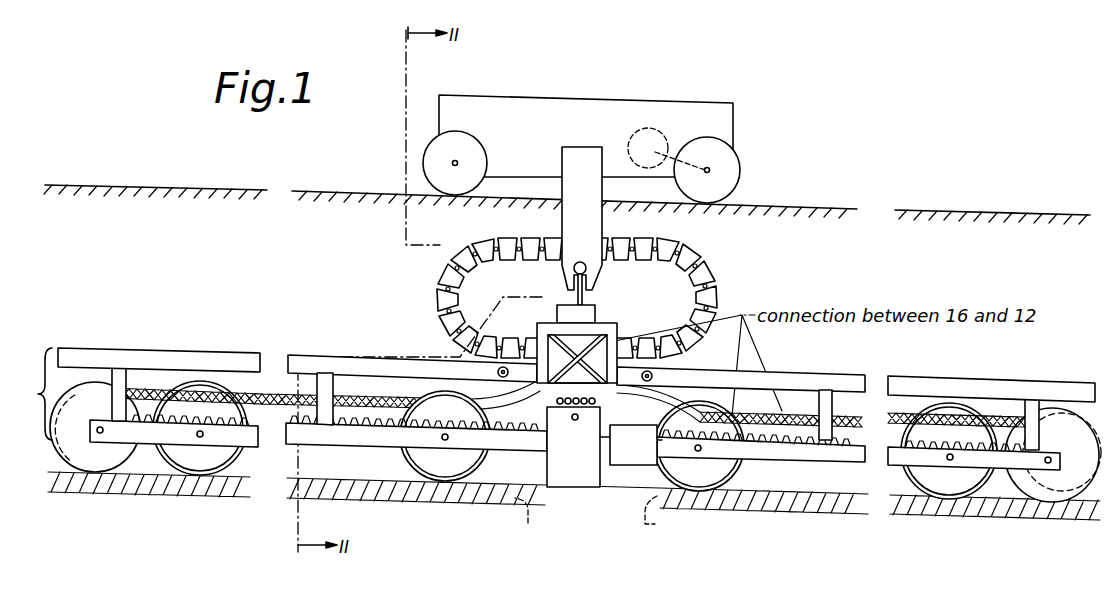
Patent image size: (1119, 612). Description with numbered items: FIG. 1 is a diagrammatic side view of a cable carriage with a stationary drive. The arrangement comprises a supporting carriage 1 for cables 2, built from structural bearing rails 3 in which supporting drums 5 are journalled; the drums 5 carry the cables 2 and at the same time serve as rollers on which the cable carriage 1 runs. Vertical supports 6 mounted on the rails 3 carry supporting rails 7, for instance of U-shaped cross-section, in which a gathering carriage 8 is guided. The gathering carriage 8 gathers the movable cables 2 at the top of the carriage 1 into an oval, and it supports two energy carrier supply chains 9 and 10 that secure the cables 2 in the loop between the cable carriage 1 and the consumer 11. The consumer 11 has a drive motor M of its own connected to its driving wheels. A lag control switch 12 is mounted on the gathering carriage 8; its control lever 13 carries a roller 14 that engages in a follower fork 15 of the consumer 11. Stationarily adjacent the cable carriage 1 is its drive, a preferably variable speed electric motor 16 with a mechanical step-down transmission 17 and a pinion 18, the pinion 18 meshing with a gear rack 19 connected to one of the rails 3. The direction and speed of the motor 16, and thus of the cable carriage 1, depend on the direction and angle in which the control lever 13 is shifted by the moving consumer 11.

The supporting carriage 1 is at (280, 396).
The cables 2 is at (287, 397).
The bearing rails 3 is at (790, 453).
The supporting drums 5 is at (208, 398).
The vertical supports 6 is at (307, 355).
The supporting rails 7 is at (356, 358).
The gathering carriage 8 is at (662, 367).
The energy carrier supply chain 9 is at (438, 297).
The energy carrier supply chain 10 is at (718, 286).
The consumer 11 is at (717, 130).
The lag control switch 12 is at (592, 307).
The control lever 13 is at (575, 294).
The roller 14 is at (596, 270).
The follower fork 15 is at (563, 268).
The electric motor 16 is at (630, 458).
The step-down transmission 17 is at (575, 479).
The pinion 18 is at (548, 411).
The gear rack 19 is at (357, 430).
The drive motor M is at (647, 132).